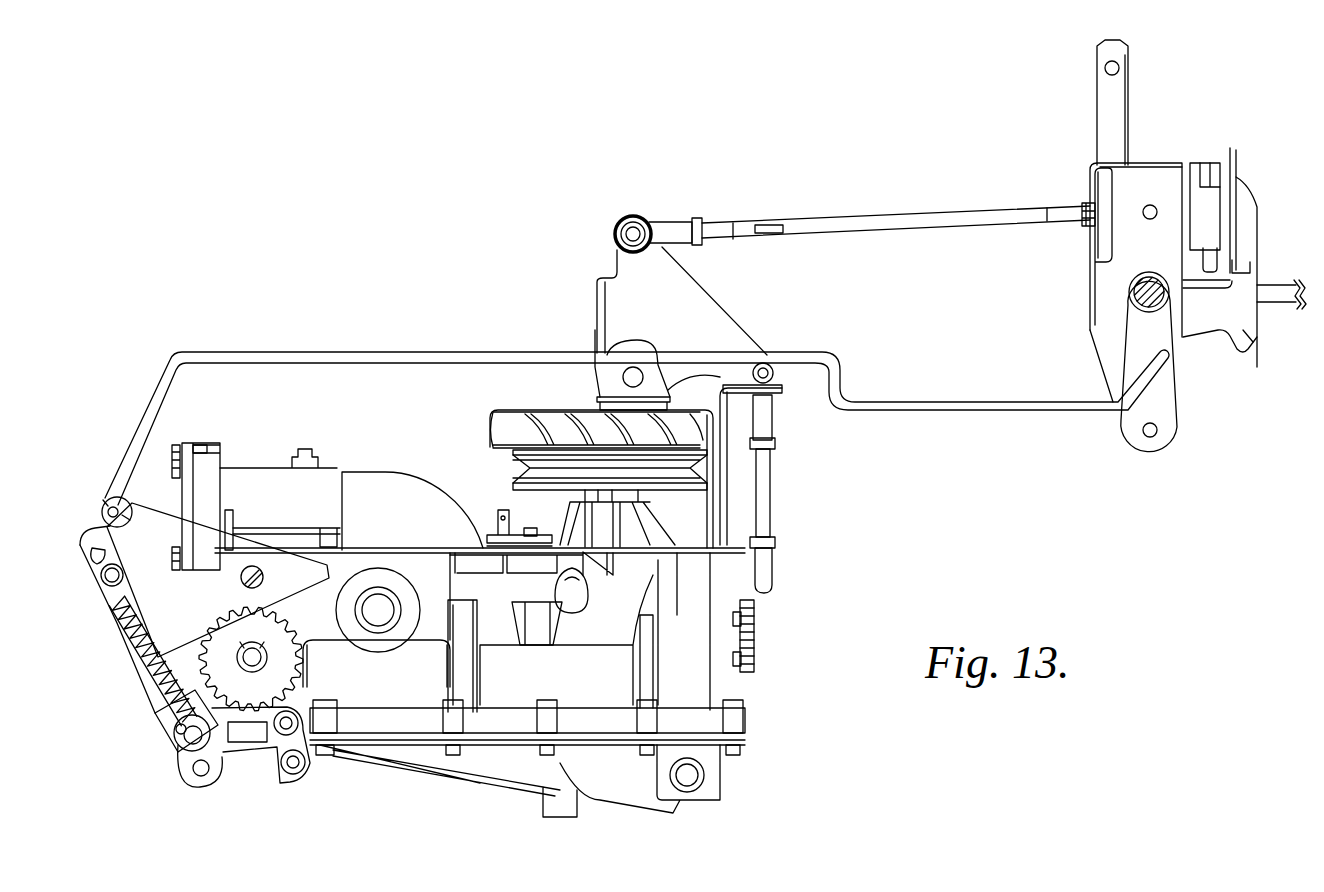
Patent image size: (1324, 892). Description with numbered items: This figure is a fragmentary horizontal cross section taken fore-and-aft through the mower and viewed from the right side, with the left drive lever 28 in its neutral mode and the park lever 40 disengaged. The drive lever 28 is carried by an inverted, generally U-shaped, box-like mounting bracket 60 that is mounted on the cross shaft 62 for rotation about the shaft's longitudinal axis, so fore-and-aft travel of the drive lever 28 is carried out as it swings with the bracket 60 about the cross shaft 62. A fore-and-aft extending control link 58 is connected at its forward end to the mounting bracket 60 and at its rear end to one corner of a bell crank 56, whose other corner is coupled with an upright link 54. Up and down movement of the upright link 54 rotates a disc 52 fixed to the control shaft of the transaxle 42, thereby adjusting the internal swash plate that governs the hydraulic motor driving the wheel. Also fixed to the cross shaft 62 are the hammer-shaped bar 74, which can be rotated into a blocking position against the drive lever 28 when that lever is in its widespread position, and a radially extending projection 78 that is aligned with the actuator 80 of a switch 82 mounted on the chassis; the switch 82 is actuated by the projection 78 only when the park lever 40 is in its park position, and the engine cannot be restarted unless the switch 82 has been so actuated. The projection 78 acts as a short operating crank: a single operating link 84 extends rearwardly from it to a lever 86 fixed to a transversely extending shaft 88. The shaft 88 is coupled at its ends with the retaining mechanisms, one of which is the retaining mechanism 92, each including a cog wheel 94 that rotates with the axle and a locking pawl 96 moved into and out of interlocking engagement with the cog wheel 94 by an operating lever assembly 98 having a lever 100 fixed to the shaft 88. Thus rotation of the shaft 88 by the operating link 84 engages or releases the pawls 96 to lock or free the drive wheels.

The drive lever 28 is at (1118, 95).
The park lever 40 is at (1278, 303).
The transaxle 42 is at (440, 792).
The disc 52 is at (755, 660).
The upright link 54 is at (765, 487).
The bell crank 56 is at (720, 318).
The control link 58 is at (940, 220).
The mounting bracket 60 is at (1143, 157).
The cross shaft 62 is at (1140, 292).
The hammer-shaped bar 74 is at (1257, 360).
The projection 78 is at (1163, 398).
The actuator 80 is at (1215, 263).
The switch 82 is at (1215, 200).
The operating link 84 is at (1003, 403).
The lever 86 is at (143, 552).
The shaft 88 is at (257, 567).
The retaining mechanism 92 is at (157, 740).
The cog wheel 94 is at (292, 662).
The locking pawl 96 is at (240, 740).
The operating lever assembly 98 is at (85, 525).
The lever 100 is at (125, 637).